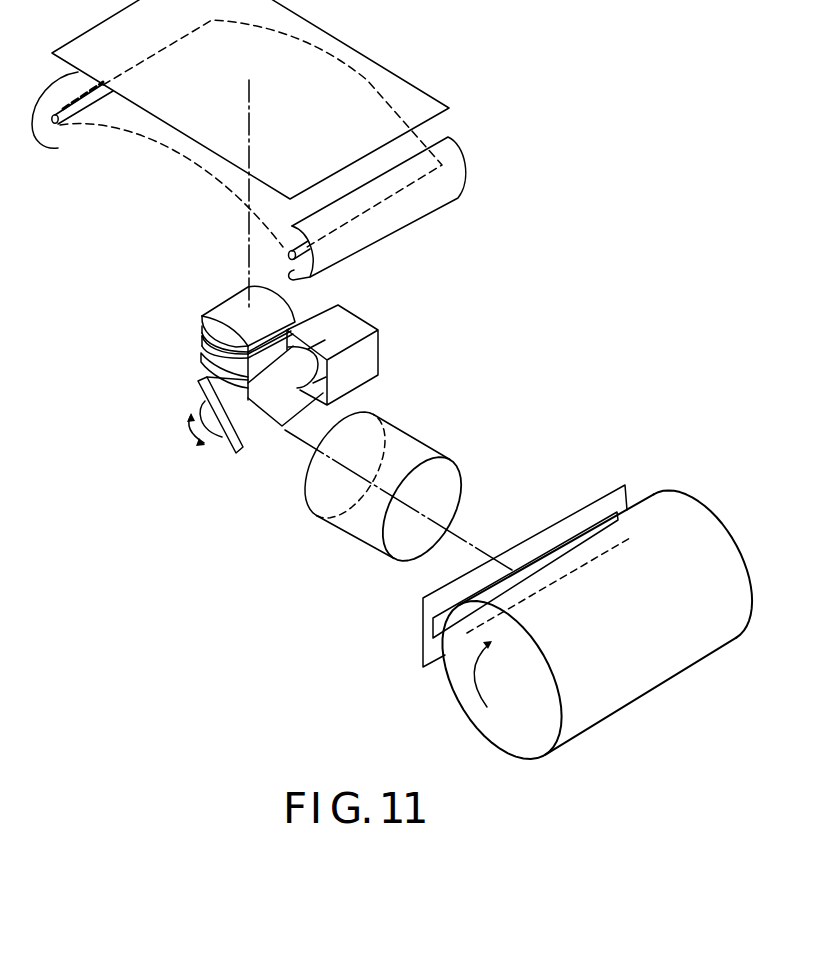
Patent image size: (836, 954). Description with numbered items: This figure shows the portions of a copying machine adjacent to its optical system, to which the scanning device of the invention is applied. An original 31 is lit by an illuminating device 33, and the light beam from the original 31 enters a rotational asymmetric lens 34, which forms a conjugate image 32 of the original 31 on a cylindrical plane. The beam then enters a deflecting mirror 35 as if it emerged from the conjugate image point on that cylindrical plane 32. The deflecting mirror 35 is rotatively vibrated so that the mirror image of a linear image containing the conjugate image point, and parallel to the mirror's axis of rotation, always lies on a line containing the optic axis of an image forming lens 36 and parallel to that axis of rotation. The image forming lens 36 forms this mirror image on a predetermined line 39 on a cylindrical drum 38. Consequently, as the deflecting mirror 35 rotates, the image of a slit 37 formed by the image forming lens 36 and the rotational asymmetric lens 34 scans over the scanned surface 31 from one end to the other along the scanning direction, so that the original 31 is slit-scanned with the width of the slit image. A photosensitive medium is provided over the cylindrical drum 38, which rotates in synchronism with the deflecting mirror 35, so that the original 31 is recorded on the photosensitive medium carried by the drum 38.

The original 31 is at (413, 92).
The conjugate image 32 is at (137, 131).
The illuminating device 33 is at (57, 125).
The rotational asymmetric lens 34 is at (197, 298).
The deflecting mirror 35 is at (235, 447).
The image forming lens 36 is at (403, 440).
The slit 37 is at (610, 492).
The cylindrical drum 38 is at (687, 498).
The predetermined line 39 is at (644, 530).